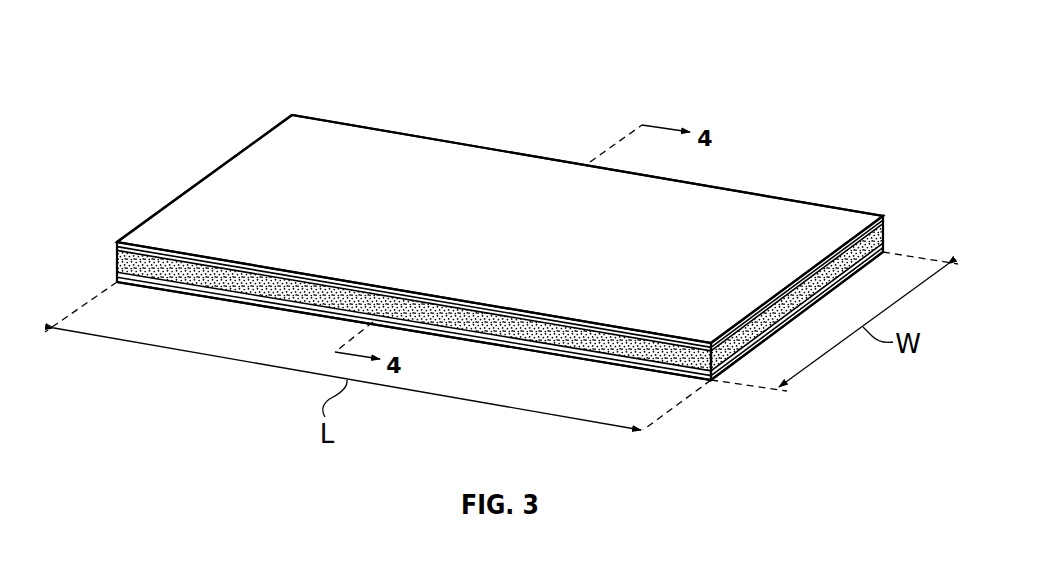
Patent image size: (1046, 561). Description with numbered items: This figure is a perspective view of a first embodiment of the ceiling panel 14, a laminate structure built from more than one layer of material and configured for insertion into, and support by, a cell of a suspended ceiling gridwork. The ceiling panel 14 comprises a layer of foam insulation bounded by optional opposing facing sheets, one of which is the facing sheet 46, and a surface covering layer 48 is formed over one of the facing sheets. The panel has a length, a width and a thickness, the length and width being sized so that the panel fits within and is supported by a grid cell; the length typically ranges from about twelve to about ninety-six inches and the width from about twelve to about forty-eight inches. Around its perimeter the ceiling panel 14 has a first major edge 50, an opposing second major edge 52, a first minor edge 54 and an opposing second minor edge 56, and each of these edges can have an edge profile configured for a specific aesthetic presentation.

The ceiling panel 14 is at (286, 40).
The facing sheet 46 is at (773, 212).
The surface covering layer 48 is at (607, 365).
The first major edge 50 is at (227, 282).
The second major edge 52 is at (455, 142).
The first minor edge 54 is at (887, 230).
The second minor edge 56 is at (207, 174).